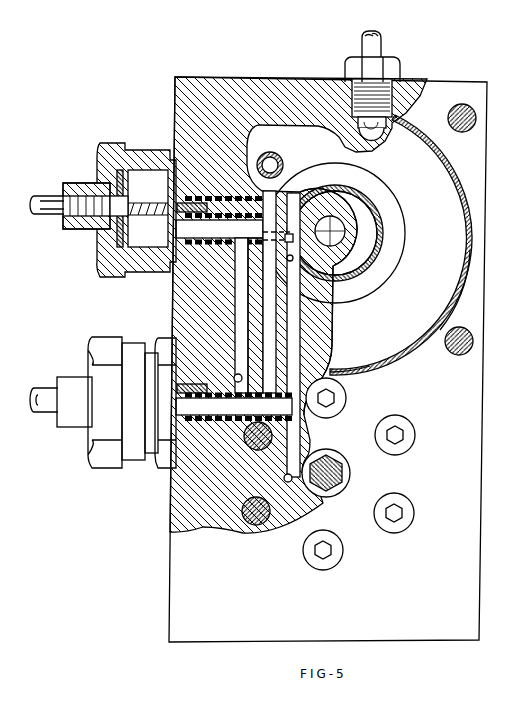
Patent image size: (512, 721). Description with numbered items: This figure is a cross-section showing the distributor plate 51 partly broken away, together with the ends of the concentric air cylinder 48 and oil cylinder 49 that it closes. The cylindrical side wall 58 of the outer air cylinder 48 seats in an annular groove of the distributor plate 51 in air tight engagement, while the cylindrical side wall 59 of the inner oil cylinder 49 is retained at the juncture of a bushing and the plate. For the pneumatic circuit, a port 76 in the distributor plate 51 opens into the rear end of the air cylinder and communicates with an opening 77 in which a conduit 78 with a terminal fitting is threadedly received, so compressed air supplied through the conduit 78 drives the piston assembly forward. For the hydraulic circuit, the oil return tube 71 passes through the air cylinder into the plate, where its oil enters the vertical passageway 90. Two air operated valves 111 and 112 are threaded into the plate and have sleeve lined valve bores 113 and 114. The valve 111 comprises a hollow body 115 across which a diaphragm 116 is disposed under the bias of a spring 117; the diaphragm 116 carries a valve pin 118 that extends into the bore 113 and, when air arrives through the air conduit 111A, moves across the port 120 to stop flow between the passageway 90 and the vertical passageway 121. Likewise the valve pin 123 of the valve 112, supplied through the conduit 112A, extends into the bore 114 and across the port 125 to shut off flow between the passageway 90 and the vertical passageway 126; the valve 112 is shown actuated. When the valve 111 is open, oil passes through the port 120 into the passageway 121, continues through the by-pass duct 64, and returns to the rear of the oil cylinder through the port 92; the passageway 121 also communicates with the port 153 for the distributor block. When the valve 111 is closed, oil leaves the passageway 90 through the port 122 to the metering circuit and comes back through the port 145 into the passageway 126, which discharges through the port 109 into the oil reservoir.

The air cylinder 48 is at (462, 277).
The oil cylinder 49 is at (376, 245).
The distributor plate 51 is at (224, 603).
The cylindrical side wall 58 is at (465, 221).
The cylindrical side wall 59 is at (380, 206).
The by-pass duct 64 is at (300, 181).
The oil return tube 71 is at (276, 160).
The port 76 is at (378, 137).
The opening 77 is at (400, 90).
The conduit 78 is at (380, 44).
The vertical passageway 90 is at (237, 317).
The port 92 is at (332, 218).
The port 109 is at (331, 250).
The air operated valve 111 is at (95, 178).
The air conduit 111A is at (50, 206).
The air operated valve 112 is at (92, 357).
The air conduit 112A is at (46, 398).
The valve bore 113 is at (246, 183).
The valve bore 114 is at (228, 383).
The hollow body 115 is at (163, 175).
The diaphragm 116 is at (116, 238).
The spring 117 is at (136, 220).
The valve pin 118 is at (166, 212).
The port 120 is at (232, 245).
The vertical passageway 121 is at (270, 310).
The port 122 is at (340, 366).
The valve pin 123 is at (168, 400).
The port 125 is at (275, 400).
The vertical passageway 126 is at (327, 343).
The port 145 is at (305, 505).
The port 153 is at (236, 372).